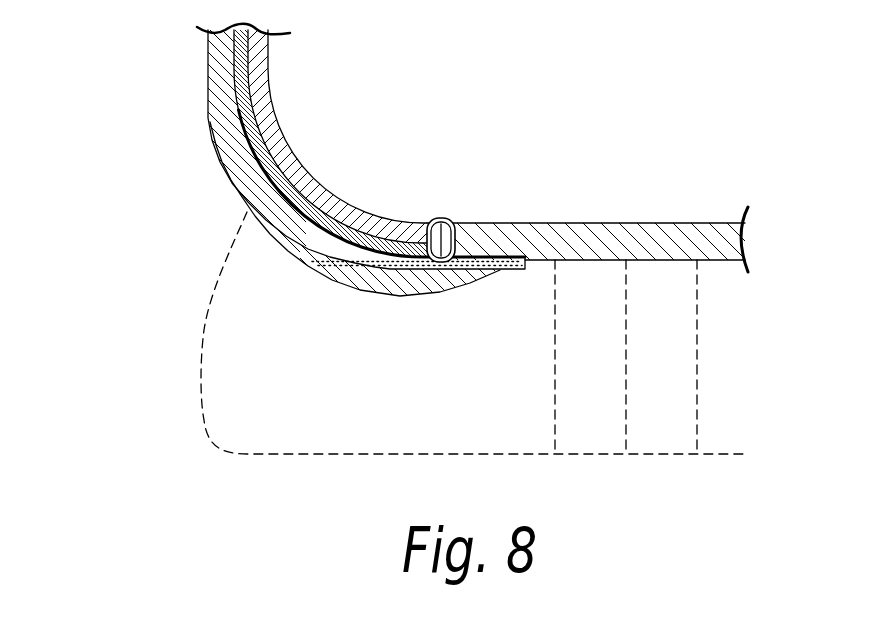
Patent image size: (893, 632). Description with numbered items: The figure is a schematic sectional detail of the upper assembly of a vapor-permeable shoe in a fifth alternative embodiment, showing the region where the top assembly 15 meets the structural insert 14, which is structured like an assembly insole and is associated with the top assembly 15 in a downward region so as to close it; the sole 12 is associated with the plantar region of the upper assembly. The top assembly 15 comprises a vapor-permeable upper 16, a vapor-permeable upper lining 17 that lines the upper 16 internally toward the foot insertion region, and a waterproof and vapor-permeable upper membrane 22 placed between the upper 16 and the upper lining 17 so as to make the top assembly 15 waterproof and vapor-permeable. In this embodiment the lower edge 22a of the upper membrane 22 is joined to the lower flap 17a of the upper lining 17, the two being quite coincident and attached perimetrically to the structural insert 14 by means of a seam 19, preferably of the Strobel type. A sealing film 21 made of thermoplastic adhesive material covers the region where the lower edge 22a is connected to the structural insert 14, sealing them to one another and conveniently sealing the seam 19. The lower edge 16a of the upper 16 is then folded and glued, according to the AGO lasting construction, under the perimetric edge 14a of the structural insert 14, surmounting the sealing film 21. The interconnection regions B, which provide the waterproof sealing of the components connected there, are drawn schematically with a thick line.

The sole 12 is at (200, 297).
The structural insert 14 is at (650, 210).
The perimetric edge of the structural insert 14a is at (518, 236).
The top assembly 15 is at (212, 162).
The vapor-permeable upper 16 is at (201, 116).
The lower edge of the upper 16a is at (404, 282).
The vapor-permeable upper lining 17 is at (283, 85).
The lower flap of the upper lining 17a is at (399, 235).
The seam 19 is at (445, 220).
The sealing film 21 is at (378, 257).
The waterproof and vapor-permeable upper membrane 22 is at (219, 52).
The lower edge of the upper membrane 22a is at (371, 222).
The interconnection regions B is at (500, 270).